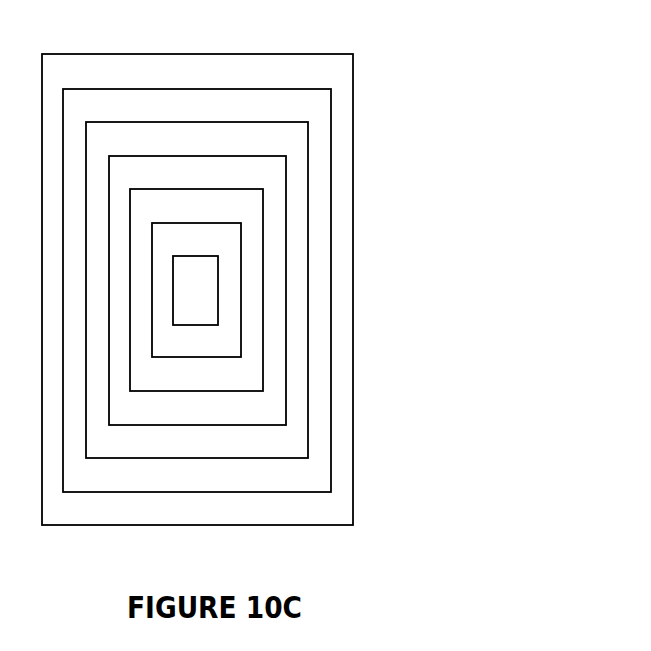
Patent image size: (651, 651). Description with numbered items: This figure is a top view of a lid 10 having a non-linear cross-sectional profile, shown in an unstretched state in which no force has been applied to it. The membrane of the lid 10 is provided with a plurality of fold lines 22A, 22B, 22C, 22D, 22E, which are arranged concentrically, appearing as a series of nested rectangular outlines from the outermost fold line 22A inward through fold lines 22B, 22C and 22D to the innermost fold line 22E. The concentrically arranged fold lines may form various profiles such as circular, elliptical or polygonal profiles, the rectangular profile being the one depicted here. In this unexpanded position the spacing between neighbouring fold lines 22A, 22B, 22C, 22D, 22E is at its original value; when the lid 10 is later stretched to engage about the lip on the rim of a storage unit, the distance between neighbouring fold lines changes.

The lid 10 is at (353, 117).
The fold line 22A is at (331, 185).
The fold line 22B is at (308, 236).
The fold line 22C is at (286, 277).
The fold line 22D is at (264, 333).
The fold line 22E is at (232, 357).